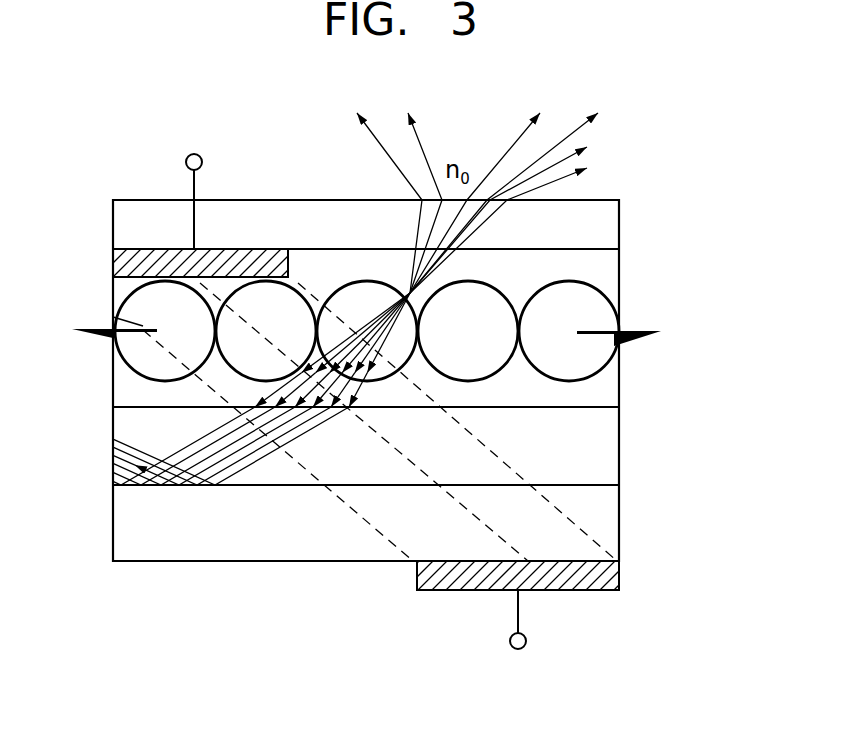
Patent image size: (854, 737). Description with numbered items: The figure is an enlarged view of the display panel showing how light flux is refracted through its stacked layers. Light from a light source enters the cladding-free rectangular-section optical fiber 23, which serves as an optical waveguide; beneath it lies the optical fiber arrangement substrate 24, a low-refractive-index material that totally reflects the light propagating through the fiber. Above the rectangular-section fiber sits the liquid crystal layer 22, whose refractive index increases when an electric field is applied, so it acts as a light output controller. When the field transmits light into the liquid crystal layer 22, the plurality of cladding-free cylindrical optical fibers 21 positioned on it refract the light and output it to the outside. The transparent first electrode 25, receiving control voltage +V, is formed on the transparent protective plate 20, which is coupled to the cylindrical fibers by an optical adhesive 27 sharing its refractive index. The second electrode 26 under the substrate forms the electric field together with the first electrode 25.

The transparent protective plate 20 is at (600, 230).
The cladding-free cylindrical optical fibers 21 is at (598, 318).
The liquid crystal layer 22 is at (600, 391).
The cladding-free rectangular-section optical fiber 23 is at (600, 457).
The optical fiber arrangement substrate 24 is at (600, 530).
The first electrode 25 is at (165, 265).
The second electrode 26 is at (612, 578).
The optical adhesive 27 is at (600, 274).